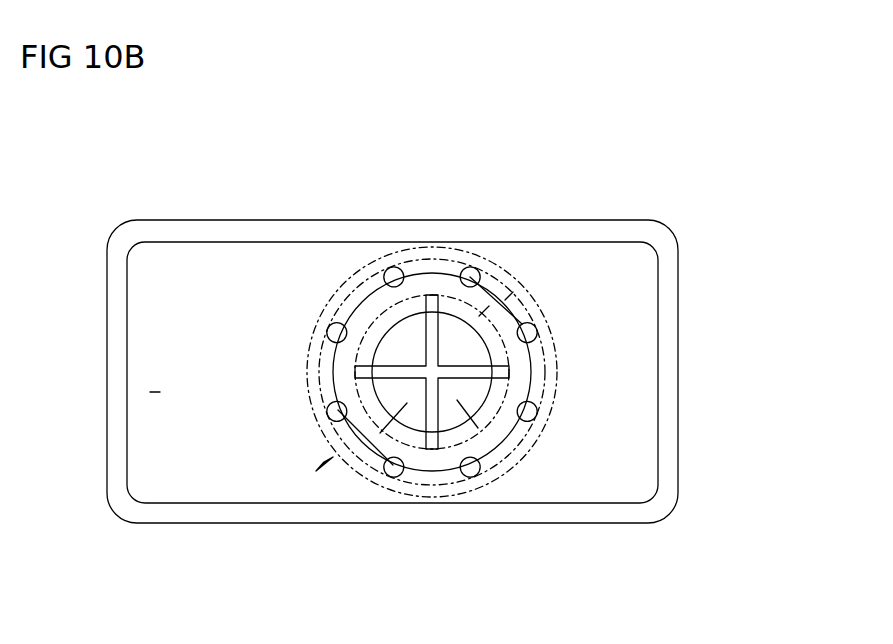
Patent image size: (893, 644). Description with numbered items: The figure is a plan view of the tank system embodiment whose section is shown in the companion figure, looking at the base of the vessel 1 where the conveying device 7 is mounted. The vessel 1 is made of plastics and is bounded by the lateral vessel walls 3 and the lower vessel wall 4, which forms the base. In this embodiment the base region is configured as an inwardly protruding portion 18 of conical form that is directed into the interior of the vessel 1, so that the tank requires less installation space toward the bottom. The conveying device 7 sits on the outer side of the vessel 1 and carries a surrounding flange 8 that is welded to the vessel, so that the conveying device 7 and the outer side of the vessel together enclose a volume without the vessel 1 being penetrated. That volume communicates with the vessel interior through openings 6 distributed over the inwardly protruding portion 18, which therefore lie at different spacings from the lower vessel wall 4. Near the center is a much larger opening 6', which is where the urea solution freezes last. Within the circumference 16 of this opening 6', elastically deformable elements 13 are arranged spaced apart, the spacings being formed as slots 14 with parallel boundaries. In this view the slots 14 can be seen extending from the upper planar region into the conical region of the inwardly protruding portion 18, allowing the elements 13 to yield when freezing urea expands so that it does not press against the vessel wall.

The vessel 1 is at (699, 212).
The lateral vessel walls 3 is at (303, 232).
The lower vessel wall 4 is at (150, 392).
The openings 6 is at (432, 366).
The central opening 6' is at (528, 216).
The conveying device 7 is at (324, 462).
The flange 8 is at (357, 267).
The elastically deformable elements 13 is at (532, 368).
The slots 14 is at (380, 378).
The circumference 16 is at (538, 310).
The inwardly protruding portion 18 is at (363, 319).